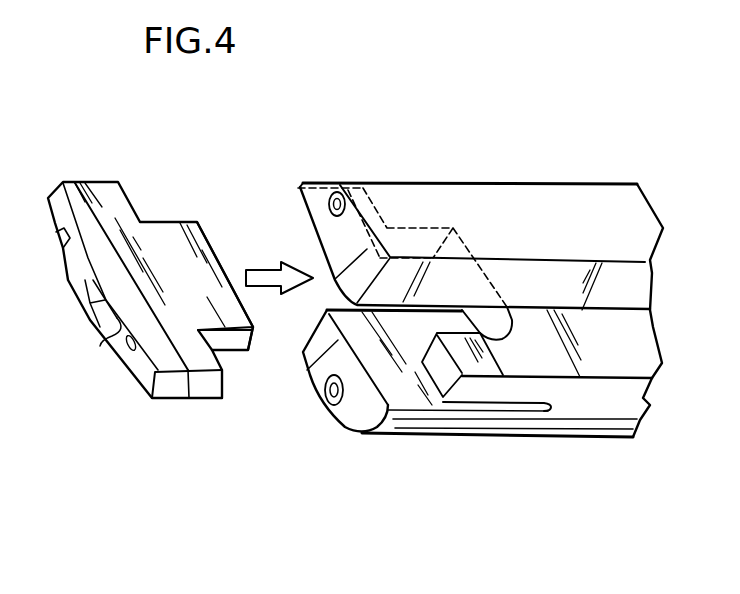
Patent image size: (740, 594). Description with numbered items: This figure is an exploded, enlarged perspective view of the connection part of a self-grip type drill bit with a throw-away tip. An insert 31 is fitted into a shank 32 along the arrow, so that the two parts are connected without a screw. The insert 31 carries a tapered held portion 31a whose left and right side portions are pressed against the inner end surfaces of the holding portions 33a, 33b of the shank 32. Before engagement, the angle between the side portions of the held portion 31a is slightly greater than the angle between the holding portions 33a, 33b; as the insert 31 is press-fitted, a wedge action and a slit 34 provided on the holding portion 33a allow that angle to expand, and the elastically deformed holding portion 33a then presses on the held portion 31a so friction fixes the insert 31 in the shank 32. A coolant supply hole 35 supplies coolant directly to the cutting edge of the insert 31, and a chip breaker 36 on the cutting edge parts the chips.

The insert 31 is at (143, 170).
The held portion 31a is at (213, 265).
The shank 32 is at (506, 173).
The holding portion 33a is at (443, 402).
The holding portion 33b is at (415, 228).
The slit 34 is at (518, 410).
The coolant supply hole 35 is at (343, 183).
The chip breaker 36 is at (122, 324).